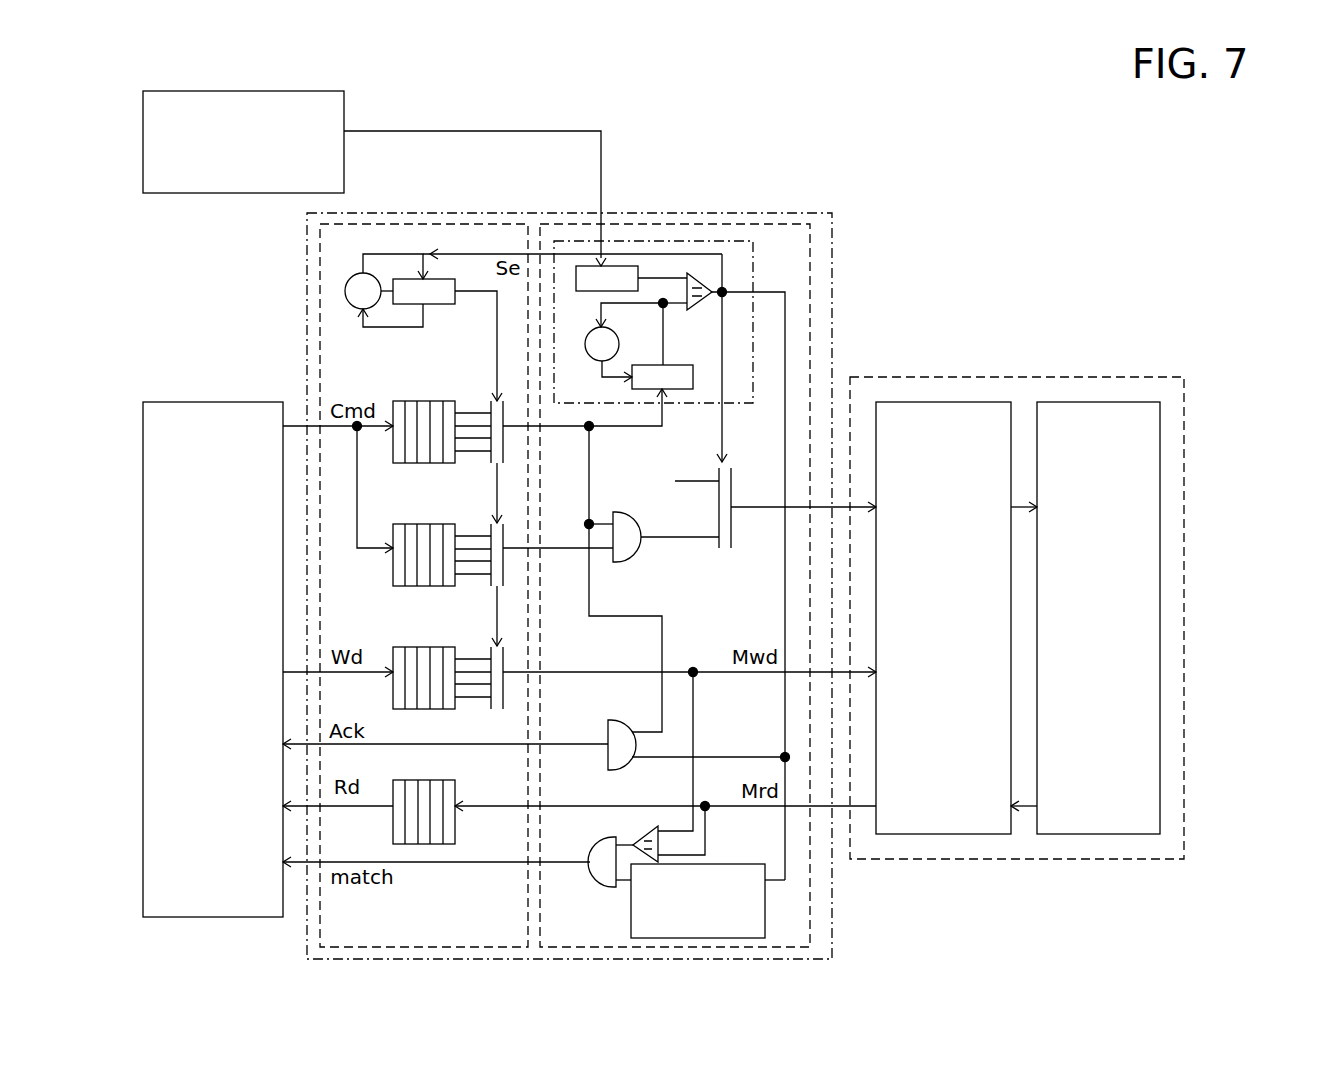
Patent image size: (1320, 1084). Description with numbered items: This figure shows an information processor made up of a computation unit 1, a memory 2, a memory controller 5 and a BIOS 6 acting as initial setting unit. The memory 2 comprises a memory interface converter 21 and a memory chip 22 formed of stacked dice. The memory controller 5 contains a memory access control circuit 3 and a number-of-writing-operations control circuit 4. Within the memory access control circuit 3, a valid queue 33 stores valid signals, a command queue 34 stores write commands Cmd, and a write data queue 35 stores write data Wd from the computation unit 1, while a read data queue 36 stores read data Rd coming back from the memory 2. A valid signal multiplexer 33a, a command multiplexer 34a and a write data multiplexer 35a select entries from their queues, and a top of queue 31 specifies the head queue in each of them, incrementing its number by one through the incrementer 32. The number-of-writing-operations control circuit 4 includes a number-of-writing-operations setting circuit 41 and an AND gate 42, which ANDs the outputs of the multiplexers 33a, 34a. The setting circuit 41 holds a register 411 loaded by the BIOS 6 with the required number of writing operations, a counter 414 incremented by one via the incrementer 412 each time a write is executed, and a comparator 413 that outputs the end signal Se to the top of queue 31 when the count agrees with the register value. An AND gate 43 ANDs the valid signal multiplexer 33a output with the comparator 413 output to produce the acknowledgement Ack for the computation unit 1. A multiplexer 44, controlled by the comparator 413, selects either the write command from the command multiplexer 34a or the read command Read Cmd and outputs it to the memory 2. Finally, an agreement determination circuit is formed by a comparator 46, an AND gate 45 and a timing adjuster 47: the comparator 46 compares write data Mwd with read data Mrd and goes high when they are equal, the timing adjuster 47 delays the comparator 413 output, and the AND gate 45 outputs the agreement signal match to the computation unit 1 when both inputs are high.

The computation unit 1 is at (215, 402).
The memory 2 is at (1000, 377).
The memory access control circuit 3 is at (307, 237).
The number-of-writing-operations control circuit 4 is at (812, 262).
The memory controller 5 is at (770, 213).
The BIOS (initial setting unit) 6 is at (344, 108).
The memory interface converter 21 is at (940, 402).
The memory chip 22 is at (1098, 402).
The top of queue (TOQ) 31 is at (425, 304).
The +1 incrementer 32 is at (352, 305).
The valid queue (Valid-Q) 33 is at (393, 445).
The valid signal multiplexer 33a is at (493, 465).
The command queue (Cmd-Q) 34 is at (393, 570).
The command multiplexer 34a is at (493, 588).
The write data queue (Data-Q) 35 is at (393, 690).
The write data multiplexer 35a is at (497, 711).
The read data queue 36 is at (455, 832).
The number-of-writing-operations setting circuit 41 is at (560, 250).
The register (num) 411 is at (625, 266).
The +1 incrementer 412 is at (590, 357).
The comparator 413 is at (700, 275).
The counter (cnt) 414 is at (672, 365).
The AND gate 42 is at (636, 545).
The AND gate 43 is at (612, 722).
The multiplexer 44 is at (731, 530).
The AND gate 45 is at (592, 872).
The comparator 46 is at (635, 833).
The timing adjuster 47 is at (728, 864).